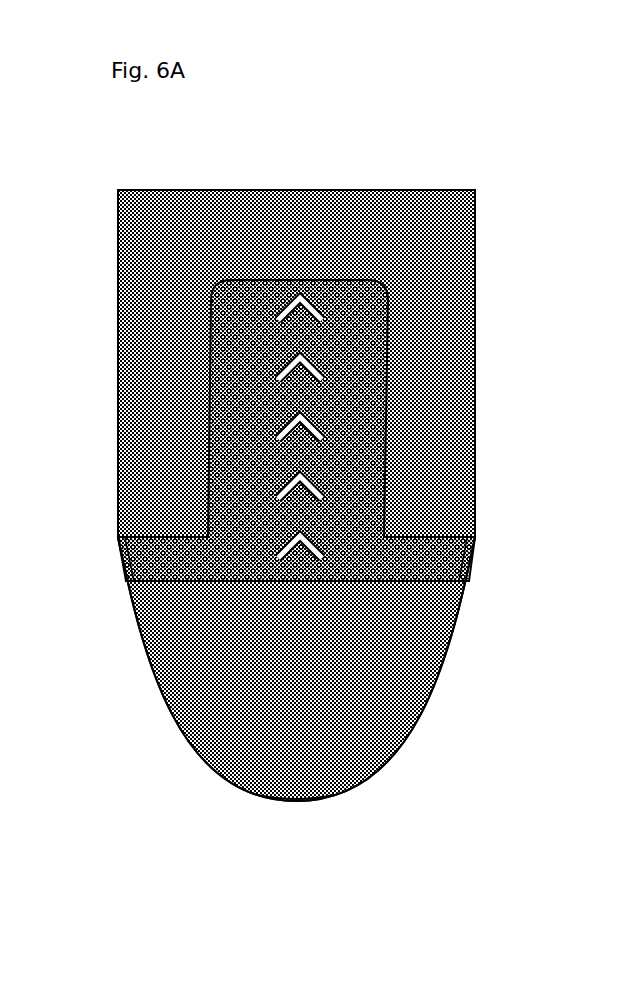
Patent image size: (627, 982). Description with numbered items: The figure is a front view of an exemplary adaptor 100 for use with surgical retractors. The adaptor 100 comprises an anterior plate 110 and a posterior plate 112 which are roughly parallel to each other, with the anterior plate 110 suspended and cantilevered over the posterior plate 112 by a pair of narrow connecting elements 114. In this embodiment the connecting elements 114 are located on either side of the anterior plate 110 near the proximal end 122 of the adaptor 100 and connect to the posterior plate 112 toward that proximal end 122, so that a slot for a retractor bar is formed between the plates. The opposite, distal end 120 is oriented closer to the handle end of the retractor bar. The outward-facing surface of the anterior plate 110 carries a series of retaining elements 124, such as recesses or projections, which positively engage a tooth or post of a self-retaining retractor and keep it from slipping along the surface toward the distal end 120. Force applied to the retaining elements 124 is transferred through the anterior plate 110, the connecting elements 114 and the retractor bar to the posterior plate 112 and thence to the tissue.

The adaptor 100 is at (299, 497).
The anterior plate 110 is at (227, 298).
The posterior plate 112 is at (397, 702).
The connecting elements 114 is at (118, 552).
The distal end 120 is at (319, 181).
The proximal end 122 is at (290, 795).
The retaining elements 124 is at (300, 355).